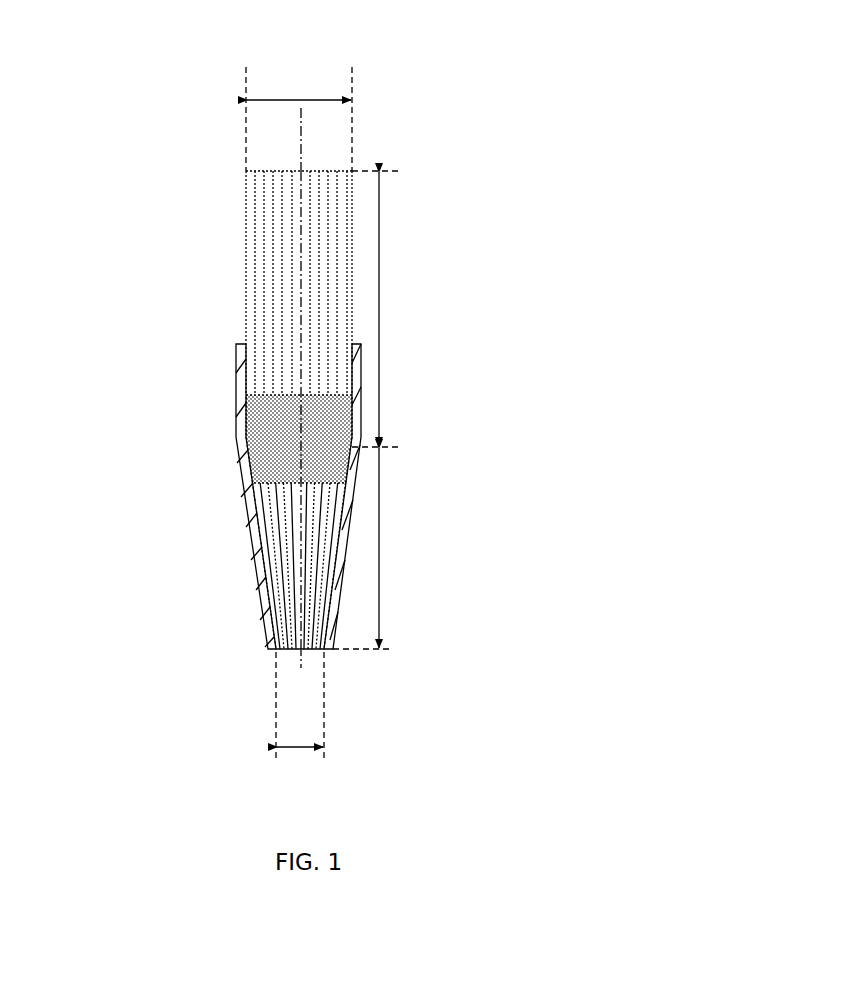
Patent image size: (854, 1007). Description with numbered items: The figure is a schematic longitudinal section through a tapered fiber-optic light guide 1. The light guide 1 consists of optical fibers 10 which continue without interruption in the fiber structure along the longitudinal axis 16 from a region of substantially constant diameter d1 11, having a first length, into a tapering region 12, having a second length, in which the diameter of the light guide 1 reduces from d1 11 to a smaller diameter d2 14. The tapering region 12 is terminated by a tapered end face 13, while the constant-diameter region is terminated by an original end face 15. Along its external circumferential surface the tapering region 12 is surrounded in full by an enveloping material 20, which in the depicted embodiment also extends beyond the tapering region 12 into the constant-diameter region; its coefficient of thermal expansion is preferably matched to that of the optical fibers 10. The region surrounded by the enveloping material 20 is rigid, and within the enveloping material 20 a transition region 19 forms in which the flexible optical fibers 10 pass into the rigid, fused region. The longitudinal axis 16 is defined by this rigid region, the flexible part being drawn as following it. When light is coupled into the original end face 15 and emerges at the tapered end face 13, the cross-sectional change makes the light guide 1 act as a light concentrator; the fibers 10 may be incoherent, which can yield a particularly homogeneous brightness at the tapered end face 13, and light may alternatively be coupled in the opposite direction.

The fiber-optic light guide 1 is at (246, 250).
The optical fibers 10 is at (268, 318).
The diameter d1 11 is at (313, 100).
The tapering region 12 is at (222, 650).
The tapered end face 13 is at (313, 651).
The diameter d2 14 is at (322, 753).
The original end face 15 is at (324, 168).
The longitudinal axis 16 is at (303, 143).
The transition region 19 is at (307, 457).
The enveloping material 20 is at (236, 433).